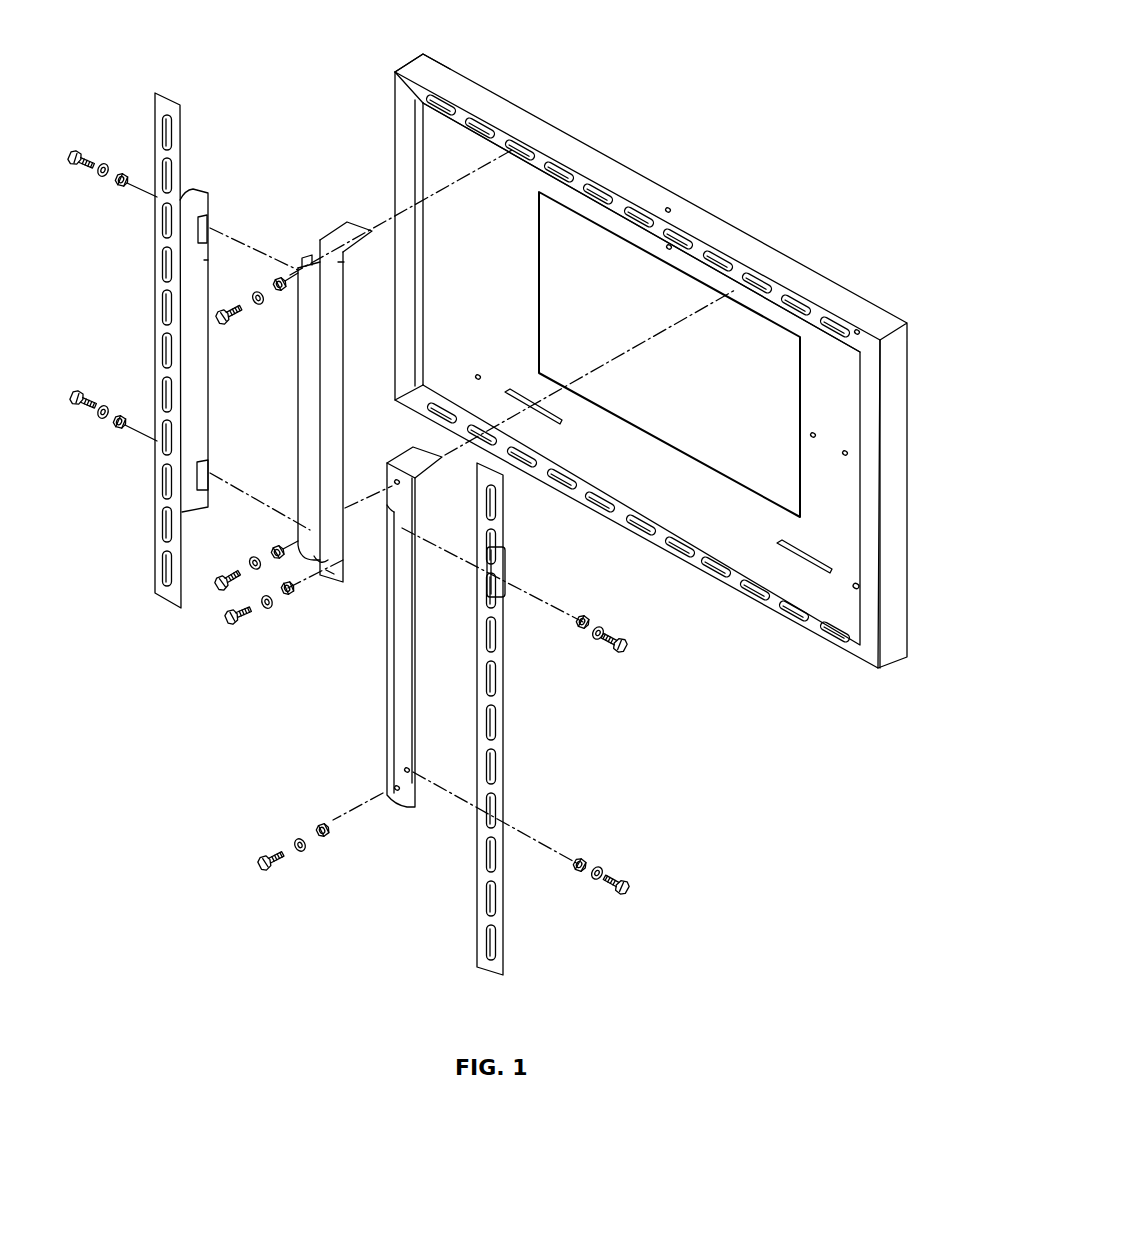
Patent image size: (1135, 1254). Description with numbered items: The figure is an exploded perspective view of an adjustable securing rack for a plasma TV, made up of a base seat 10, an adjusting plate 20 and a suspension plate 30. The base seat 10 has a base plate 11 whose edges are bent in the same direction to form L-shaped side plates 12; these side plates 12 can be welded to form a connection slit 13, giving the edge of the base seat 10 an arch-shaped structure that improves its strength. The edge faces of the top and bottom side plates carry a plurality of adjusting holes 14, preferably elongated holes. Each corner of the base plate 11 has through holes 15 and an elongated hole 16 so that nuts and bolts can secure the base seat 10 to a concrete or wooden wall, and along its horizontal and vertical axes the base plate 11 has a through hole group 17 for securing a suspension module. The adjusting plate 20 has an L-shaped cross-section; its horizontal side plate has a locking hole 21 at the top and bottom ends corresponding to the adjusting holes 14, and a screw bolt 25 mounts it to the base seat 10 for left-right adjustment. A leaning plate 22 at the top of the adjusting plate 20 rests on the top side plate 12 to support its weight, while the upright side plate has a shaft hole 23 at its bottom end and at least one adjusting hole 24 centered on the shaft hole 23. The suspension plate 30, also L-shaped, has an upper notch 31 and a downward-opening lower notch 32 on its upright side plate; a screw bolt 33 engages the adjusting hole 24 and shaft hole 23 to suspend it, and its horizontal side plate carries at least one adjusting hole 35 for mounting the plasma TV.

The base seat 10 is at (665, 140).
The base plate 11 is at (442, 155).
The L-shaped side plate 12 is at (465, 110).
The connection slit 13 is at (408, 90).
The adjusting hole 14 is at (720, 252).
The through hole 15 is at (857, 587).
The elongated hole 16 is at (792, 553).
The through hole group 17 is at (670, 208).
The adjusting plate 20 is at (305, 376).
The locking hole 21 is at (342, 268).
The leaning plate 22 is at (345, 224).
The shaft hole 23 is at (320, 532).
The adjusting hole 24 is at (300, 268).
The screw bolt 25 is at (238, 630).
The suspension plate 30 is at (158, 243).
The upper notch 31 is at (207, 220).
The lower notch 32 is at (207, 472).
The screw bolt 33 is at (82, 152).
The adjusting hole 35 is at (163, 352).